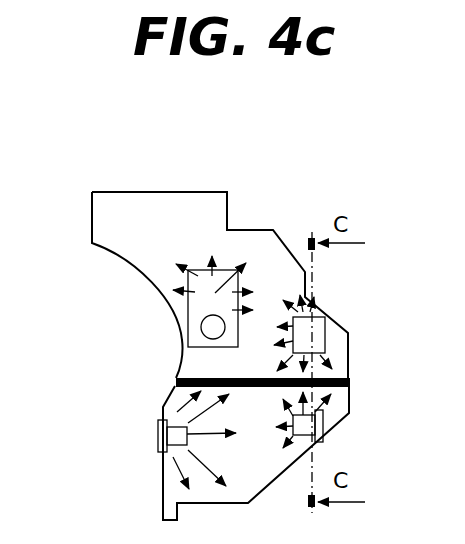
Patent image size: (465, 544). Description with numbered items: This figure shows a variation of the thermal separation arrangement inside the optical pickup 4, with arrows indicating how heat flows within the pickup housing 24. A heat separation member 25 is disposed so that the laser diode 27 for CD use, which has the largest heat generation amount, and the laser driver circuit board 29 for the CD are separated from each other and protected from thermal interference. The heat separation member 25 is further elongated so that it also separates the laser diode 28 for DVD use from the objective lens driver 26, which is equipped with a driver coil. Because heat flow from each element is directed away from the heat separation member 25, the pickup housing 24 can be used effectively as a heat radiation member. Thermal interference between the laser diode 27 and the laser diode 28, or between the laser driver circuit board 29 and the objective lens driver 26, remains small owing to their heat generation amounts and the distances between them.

The optical pickup 4 is at (160, 323).
The pickup housing 24 is at (152, 210).
The heat separation member 25 is at (174, 383).
The objective lens driver 26 is at (218, 280).
The laser diode for CD use 27 is at (324, 428).
The laser diode for DVD use 28 is at (158, 433).
The laser driver circuit board for the CD 29 is at (318, 330).